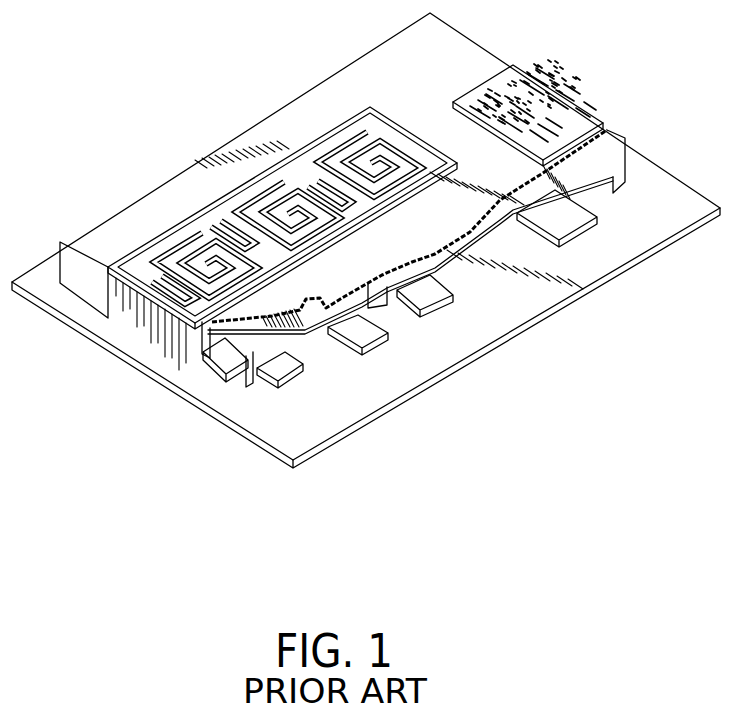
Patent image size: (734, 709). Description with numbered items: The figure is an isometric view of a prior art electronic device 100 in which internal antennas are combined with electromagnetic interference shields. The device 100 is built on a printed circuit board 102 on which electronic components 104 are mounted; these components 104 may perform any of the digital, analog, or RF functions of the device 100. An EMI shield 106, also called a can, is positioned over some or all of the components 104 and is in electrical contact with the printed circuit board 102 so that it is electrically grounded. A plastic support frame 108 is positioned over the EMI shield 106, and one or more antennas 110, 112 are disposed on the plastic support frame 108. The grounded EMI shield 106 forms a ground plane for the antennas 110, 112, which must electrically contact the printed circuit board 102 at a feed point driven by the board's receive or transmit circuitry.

The electronic device 100 is at (366, 235).
The printed circuit board 102 is at (323, 413).
The electronic components 104 is at (445, 307).
The EMI shield 106 is at (582, 178).
The plastic support frame 108 is at (282, 186).
The antenna 110 is at (522, 100).
The antenna 112 is at (158, 238).